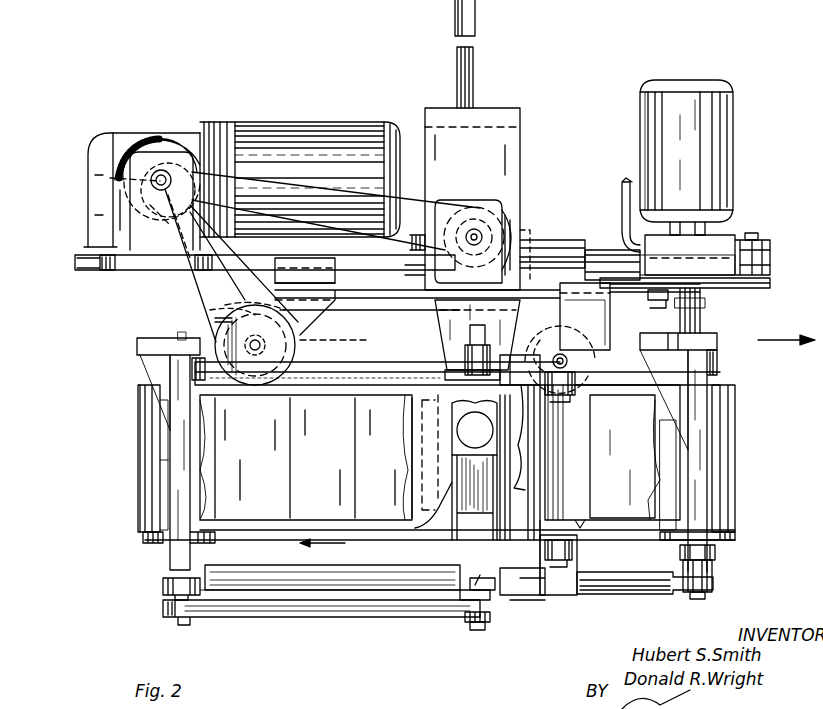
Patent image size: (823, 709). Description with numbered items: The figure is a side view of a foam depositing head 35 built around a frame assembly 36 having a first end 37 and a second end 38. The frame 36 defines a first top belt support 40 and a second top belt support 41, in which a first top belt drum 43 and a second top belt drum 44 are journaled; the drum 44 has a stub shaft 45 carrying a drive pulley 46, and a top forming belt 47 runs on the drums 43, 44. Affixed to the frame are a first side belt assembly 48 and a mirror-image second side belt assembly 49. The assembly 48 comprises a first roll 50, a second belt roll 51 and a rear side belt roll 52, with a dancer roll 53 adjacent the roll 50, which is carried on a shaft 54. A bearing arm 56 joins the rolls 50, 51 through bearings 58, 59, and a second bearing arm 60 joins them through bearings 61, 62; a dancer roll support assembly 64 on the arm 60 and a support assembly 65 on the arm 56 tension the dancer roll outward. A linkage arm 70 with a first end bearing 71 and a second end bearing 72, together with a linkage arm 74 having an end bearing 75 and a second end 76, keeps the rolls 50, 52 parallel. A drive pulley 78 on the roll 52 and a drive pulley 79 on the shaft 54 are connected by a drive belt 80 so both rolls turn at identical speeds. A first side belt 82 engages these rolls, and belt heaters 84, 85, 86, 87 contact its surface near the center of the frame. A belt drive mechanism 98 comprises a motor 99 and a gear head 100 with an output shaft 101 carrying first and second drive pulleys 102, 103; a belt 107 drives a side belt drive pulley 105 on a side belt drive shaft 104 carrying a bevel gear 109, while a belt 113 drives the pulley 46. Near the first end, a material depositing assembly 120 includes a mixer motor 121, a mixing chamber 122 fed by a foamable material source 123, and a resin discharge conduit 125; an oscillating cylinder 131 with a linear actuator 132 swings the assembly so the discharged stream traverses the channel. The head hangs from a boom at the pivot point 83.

The foam depositing head 35 is at (146, 66).
The frame assembly 36 is at (395, 287).
The first end 37 is at (725, 282).
The second end 38 is at (77, 284).
The first top belt support 40 is at (604, 347).
The second top belt support 41 is at (270, 295).
The first top belt drum 43 is at (558, 332).
The second top belt drum 44 is at (215, 318).
The stub shaft 45 is at (260, 345).
The drive pulley 46 is at (250, 308).
The top forming belt 47 is at (378, 315).
The first side belt assembly 48 is at (125, 392).
The second side belt assembly 49 is at (130, 433).
The first roll 50 is at (445, 528).
The second belt roll 51 is at (735, 540).
The third or rear side belt roll 52 is at (148, 540).
The dancer roll 53 is at (580, 527).
The shaft 54 is at (455, 350).
The bearing arm 56 is at (598, 595).
The bearing 58 is at (478, 580).
The bearing 59 is at (715, 575).
The second bearing arm 60 is at (525, 370).
The bearing 61 is at (455, 374).
The bearing 62 is at (715, 368).
The dancer roll support assembly 64 is at (563, 355).
The support assembly 65 is at (570, 568).
The linkage arm 70 is at (345, 385).
The first end bearing 71 is at (185, 355).
The second end bearing 72 is at (455, 378).
The linkage arm 74 is at (300, 566).
The end bearing 75 is at (185, 578).
The second end 76 is at (498, 600).
The drive pulley 78 is at (168, 615).
The drive pulley 79 is at (490, 620).
The bottom rod 80 is at (378, 614).
The first side belt 82 is at (140, 493).
The pivot point 83 is at (455, 18).
The belt heater 84 is at (245, 459).
The belt heater 85 is at (329, 458).
The belt heater 86 is at (387, 458).
The belt heater 87 is at (616, 440).
The belt drive mechanism 98 is at (249, 116).
The motor 99 is at (316, 128).
The gear head or transmission 100 is at (192, 133).
The output shaft 101 is at (160, 175).
The first drive pulley 102 is at (155, 186).
The second drive pulley 103 is at (110, 178).
The side belt drive shaft 104 is at (478, 230).
The side belt drive pulley 105 is at (500, 225).
The belt 107 is at (416, 190).
The bevel gear 109 is at (520, 232).
The belt 113 is at (210, 313).
The material depositing assembly 120 is at (745, 138).
The mixer motor 121 is at (650, 105).
The mixing chamber 122 is at (720, 238).
The foamable material source 123 is at (628, 200).
The resin discharge conduit 125 is at (705, 315).
The oscillating cylinder 131 is at (575, 245).
The linear actuator 132 is at (612, 250).